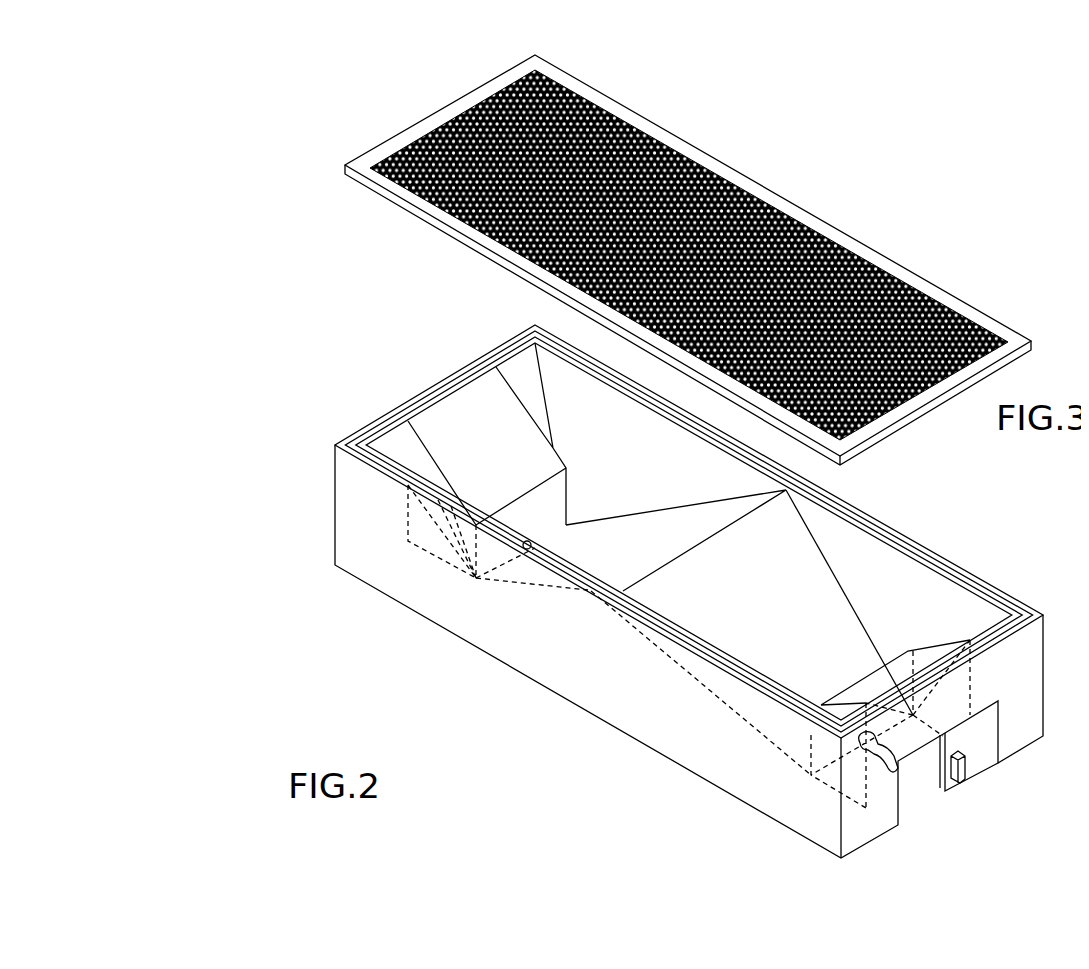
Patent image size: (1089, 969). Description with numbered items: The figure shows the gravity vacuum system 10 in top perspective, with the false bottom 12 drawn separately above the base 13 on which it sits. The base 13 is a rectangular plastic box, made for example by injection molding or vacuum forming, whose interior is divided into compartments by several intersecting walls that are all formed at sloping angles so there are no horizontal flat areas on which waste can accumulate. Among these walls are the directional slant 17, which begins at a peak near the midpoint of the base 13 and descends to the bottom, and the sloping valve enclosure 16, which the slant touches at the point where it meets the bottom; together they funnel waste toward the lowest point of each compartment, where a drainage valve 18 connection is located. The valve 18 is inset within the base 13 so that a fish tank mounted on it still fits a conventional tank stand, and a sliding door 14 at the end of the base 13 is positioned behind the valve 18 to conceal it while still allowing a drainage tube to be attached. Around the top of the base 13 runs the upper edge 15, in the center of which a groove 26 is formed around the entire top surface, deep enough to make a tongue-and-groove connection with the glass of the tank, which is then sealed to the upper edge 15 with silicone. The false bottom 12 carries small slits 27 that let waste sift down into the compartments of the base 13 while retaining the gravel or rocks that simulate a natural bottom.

In FIG. 2, the gravity vacuum system 10 is at (237, 290).
In FIG. 3, the false bottom 12 is at (742, 168).
In FIG. 2, the base 13 is at (360, 533).
In FIG. 2, the sliding door 14 is at (965, 742).
In FIG. 2, the upper edge 15 is at (350, 423).
In FIG. 2, the sloping valve enclosure 16 is at (477, 463).
In FIG. 2, the directional slant 17 is at (718, 573).
In FIG. 2, the drainage valve 18 is at (877, 752).
In FIG. 2, the groove 26 is at (897, 537).
In FIG. 3, the slits 27 is at (492, 215).